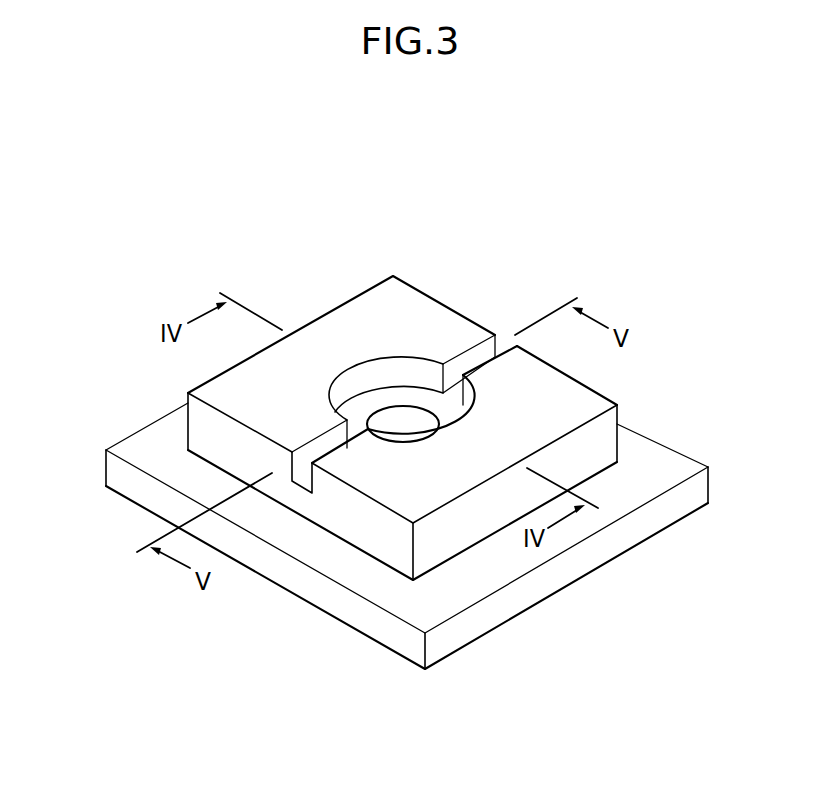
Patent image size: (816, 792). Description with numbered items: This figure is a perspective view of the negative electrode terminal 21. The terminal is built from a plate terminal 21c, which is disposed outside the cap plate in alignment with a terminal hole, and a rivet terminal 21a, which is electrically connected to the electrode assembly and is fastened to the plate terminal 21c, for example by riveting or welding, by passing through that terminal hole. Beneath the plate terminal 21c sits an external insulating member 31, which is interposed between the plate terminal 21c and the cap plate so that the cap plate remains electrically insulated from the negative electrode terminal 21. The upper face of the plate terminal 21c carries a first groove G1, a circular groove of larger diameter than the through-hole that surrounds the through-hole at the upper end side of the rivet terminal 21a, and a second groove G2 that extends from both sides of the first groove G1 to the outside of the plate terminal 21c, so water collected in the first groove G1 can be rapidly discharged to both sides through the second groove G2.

The negative electrode terminal 21 is at (394, 382).
The rivet terminal 21a is at (403, 420).
The plate terminal 21c is at (575, 398).
The first groove G1 is at (377, 378).
The second groove G2 is at (318, 452).
The external insulating member 31 is at (548, 583).